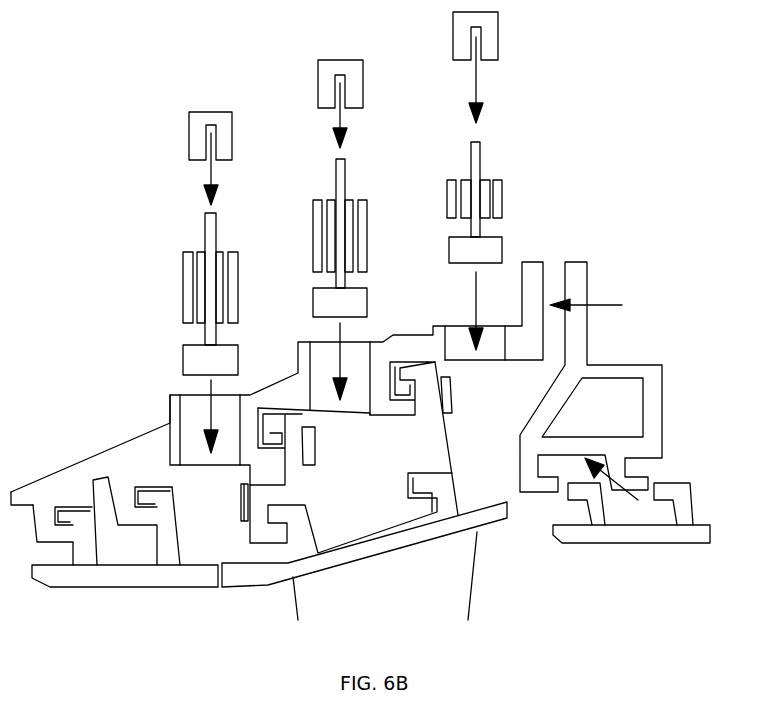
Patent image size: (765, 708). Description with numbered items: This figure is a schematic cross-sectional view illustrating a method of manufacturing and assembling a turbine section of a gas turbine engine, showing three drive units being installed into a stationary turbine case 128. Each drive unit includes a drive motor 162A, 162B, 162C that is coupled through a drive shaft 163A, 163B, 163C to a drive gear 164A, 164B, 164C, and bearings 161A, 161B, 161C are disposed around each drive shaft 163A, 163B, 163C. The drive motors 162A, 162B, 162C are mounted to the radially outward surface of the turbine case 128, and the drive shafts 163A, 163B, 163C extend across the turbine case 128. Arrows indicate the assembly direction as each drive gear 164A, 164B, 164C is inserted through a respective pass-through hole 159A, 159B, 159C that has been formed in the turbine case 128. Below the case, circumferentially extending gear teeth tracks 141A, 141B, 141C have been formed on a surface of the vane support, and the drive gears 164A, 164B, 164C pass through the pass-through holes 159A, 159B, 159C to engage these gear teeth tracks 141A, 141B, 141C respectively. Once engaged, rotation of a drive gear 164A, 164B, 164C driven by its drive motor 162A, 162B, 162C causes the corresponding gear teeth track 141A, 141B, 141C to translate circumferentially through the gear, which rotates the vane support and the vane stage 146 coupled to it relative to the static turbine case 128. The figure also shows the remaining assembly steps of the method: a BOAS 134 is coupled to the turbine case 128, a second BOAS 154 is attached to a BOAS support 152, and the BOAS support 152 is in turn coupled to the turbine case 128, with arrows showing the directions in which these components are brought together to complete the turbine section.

The turbine case 128 is at (128, 463).
The BOAS 134 is at (120, 575).
The vane stage 146 is at (480, 600).
The second BOAS 154 is at (683, 533).
The BOAS support 152 is at (652, 425).
The gear teeth track 141A is at (238, 498).
The gear teeth track 141B is at (313, 442).
The gear teeth track 141C is at (455, 388).
The pass-through hole 159A is at (193, 415).
The pass-through hole 159B is at (327, 347).
The pass-through hole 159C is at (458, 337).
The bearings 161A is at (222, 268).
The bearings 161B is at (350, 222).
The bearings 161C is at (495, 193).
The drive motor 162A is at (200, 125).
The drive motor 162B is at (320, 74).
The drive motor 162C is at (453, 27).
The drive shaft 163A is at (207, 220).
The drive shaft 163B is at (338, 170).
The drive shaft 163C is at (472, 147).
The drive gear 164A is at (195, 360).
The drive gear 164B is at (323, 298).
The drive gear 164C is at (452, 247).